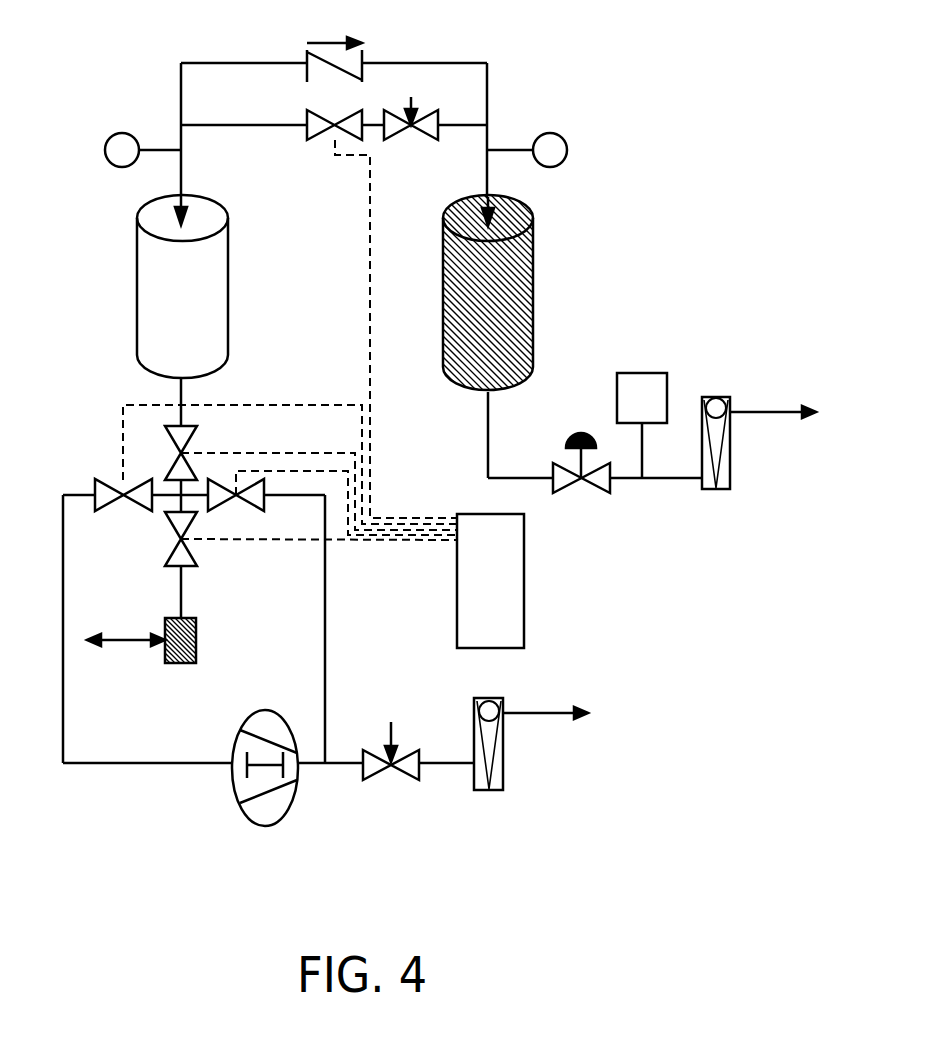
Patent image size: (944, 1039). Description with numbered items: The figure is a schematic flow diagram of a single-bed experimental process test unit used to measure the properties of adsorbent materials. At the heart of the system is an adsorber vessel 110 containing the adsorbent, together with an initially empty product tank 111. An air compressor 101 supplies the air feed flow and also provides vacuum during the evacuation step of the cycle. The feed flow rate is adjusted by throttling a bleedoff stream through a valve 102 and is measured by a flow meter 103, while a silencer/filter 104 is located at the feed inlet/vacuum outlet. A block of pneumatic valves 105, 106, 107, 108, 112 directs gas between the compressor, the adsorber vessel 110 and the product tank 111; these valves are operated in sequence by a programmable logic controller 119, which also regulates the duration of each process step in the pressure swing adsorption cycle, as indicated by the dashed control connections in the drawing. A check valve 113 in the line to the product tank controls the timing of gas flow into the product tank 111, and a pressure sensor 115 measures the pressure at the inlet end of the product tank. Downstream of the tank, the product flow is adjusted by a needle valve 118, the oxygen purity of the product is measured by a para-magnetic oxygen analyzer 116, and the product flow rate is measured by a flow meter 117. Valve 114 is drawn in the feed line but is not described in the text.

The air compressor 101 is at (233, 783).
The valve 102 is at (380, 778).
The flow meter 103 is at (505, 770).
The silencer/filter 104 is at (122, 133).
The pneumatic valve 105 is at (177, 530).
The pneumatic valve 106 is at (247, 502).
The pneumatic valve 107 is at (190, 446).
The pneumatic valve 108 is at (112, 481).
The adsorber vessel 110 is at (228, 312).
The product tank 111 is at (533, 322).
The pneumatic valve 112 is at (314, 135).
The check valve 113 is at (362, 50).
The control valve 114 is at (458, 100).
The pressure sensor 115 is at (567, 150).
The para-magnetic oxygen analyzer 116 is at (661, 410).
The flow meter 117 is at (732, 465).
The needle valve 118 is at (572, 485).
The programmable logic controller 119 is at (509, 590).